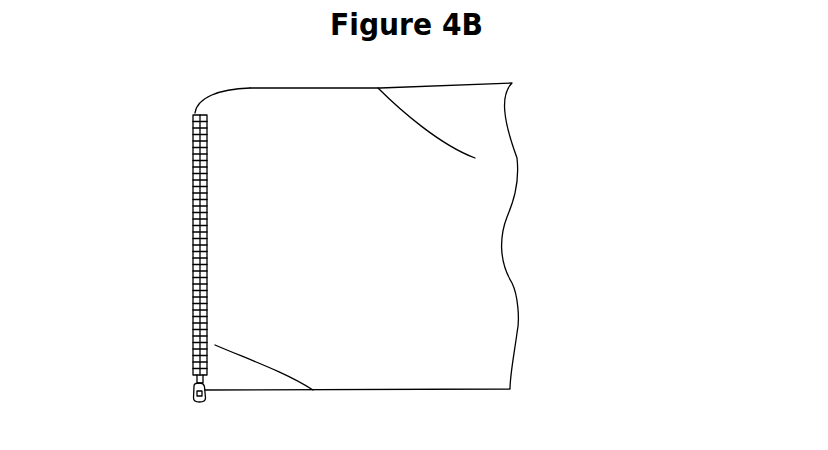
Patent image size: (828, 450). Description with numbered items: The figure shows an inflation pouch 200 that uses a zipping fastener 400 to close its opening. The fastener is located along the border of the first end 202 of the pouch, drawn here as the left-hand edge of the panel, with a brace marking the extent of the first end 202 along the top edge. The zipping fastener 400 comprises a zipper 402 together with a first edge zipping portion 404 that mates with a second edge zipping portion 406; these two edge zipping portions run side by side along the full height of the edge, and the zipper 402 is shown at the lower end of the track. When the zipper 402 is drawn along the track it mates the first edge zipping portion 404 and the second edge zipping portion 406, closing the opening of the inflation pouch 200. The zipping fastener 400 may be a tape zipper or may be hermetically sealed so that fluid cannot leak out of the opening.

The inflation pouch 200 is at (543, 72).
The first end 202 is at (327, 88).
The zipping fastener 400 is at (125, 270).
The zipper 402 is at (195, 398).
The first edge zipping portion 404 is at (193, 228).
The second edge zipping portion 406 is at (197, 287).